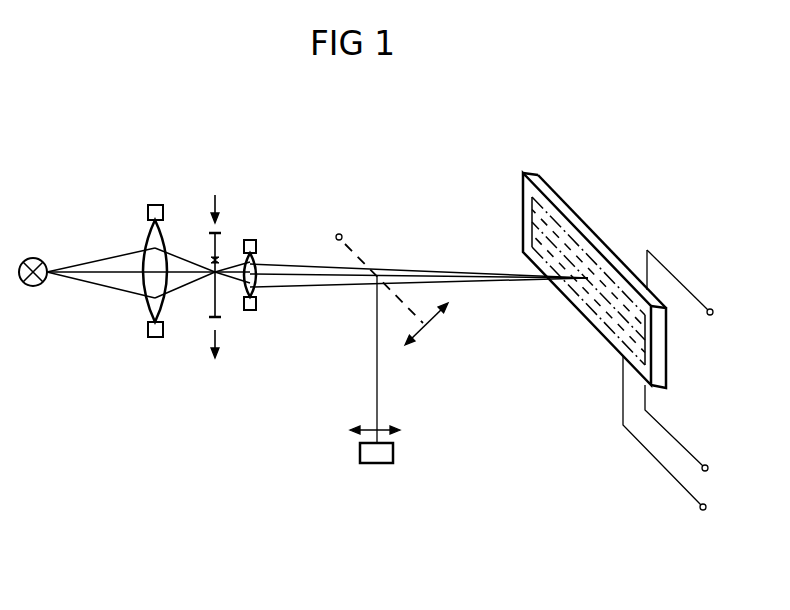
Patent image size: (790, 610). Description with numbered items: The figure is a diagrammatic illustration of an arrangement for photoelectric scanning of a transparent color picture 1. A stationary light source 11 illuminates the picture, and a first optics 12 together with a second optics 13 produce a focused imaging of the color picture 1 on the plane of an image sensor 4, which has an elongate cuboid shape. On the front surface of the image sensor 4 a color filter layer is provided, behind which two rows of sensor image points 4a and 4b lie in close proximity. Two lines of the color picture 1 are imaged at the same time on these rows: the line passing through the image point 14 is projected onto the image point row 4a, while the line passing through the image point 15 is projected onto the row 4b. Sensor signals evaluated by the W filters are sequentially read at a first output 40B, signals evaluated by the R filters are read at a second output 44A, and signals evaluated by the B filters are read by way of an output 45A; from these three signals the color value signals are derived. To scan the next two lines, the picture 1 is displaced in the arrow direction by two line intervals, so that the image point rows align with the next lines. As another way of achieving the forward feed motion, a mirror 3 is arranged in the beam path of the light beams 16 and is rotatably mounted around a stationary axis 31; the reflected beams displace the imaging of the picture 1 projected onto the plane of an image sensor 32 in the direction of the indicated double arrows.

The transparent color picture 1 is at (211, 300).
The mirror 3 is at (366, 258).
The image sensor 4 is at (562, 206).
The image point row 4a is at (522, 227).
The image point row 4b is at (530, 245).
The stationary light source 11 is at (33, 292).
The first optics 12 is at (139, 271).
The second optics 13 is at (260, 289).
The image point 14 is at (212, 280).
The image point 15 is at (212, 257).
The light beams 16 is at (465, 283).
The stationary axis 31 is at (337, 222).
The image sensor 32 is at (386, 371).
The first output 40B is at (689, 315).
The second output 44A is at (675, 464).
The output 45A is at (695, 437).